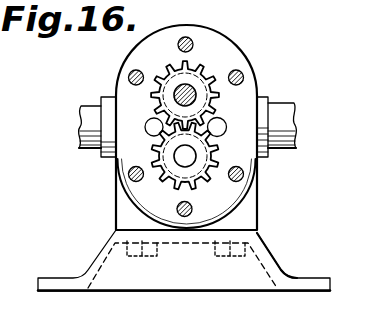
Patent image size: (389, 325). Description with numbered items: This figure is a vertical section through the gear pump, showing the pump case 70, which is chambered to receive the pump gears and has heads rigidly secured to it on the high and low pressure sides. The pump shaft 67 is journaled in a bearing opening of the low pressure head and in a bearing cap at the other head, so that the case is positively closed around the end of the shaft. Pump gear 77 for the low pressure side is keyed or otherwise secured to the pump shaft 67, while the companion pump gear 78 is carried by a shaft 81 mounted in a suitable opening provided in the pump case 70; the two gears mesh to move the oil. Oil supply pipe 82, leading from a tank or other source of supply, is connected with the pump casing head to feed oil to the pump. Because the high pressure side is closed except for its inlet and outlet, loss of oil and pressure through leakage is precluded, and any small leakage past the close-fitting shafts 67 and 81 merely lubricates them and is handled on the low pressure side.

The pump case 70 is at (142, 58).
The pump shaft 67 is at (187, 93).
The pump gear 77 is at (210, 77).
The oil supply pipe 82 is at (280, 120).
The shaft 81 is at (183, 157).
The pump gear 78 is at (212, 170).